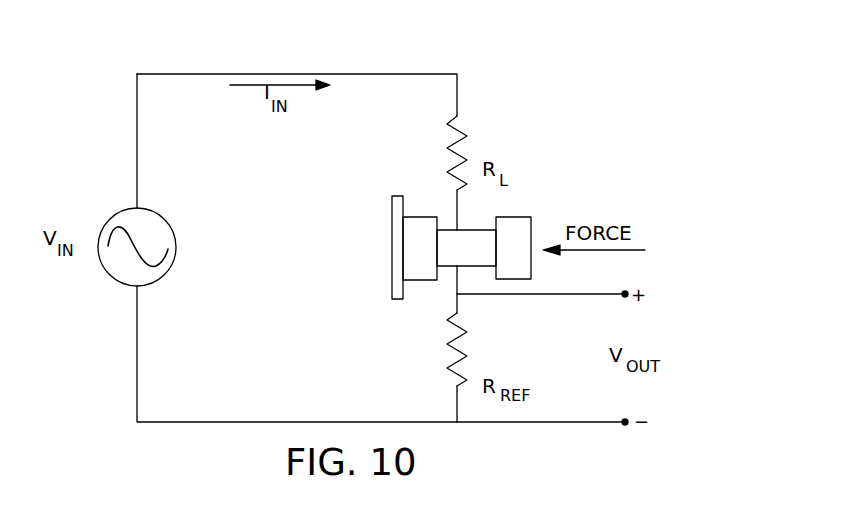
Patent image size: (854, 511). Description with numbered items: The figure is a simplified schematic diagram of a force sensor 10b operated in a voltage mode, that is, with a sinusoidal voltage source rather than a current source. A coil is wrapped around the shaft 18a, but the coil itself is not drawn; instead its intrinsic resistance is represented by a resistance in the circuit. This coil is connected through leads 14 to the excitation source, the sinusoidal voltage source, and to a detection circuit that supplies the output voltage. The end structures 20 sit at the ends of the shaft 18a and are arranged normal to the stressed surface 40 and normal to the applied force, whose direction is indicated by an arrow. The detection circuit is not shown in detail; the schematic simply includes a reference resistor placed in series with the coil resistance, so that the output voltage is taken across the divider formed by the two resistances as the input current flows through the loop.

The force sensor 10b is at (613, 79).
The leads 14 is at (457, 100).
The shaft 18a is at (470, 238).
The end structures 20 is at (428, 222).
The stressed surface 40 is at (390, 276).